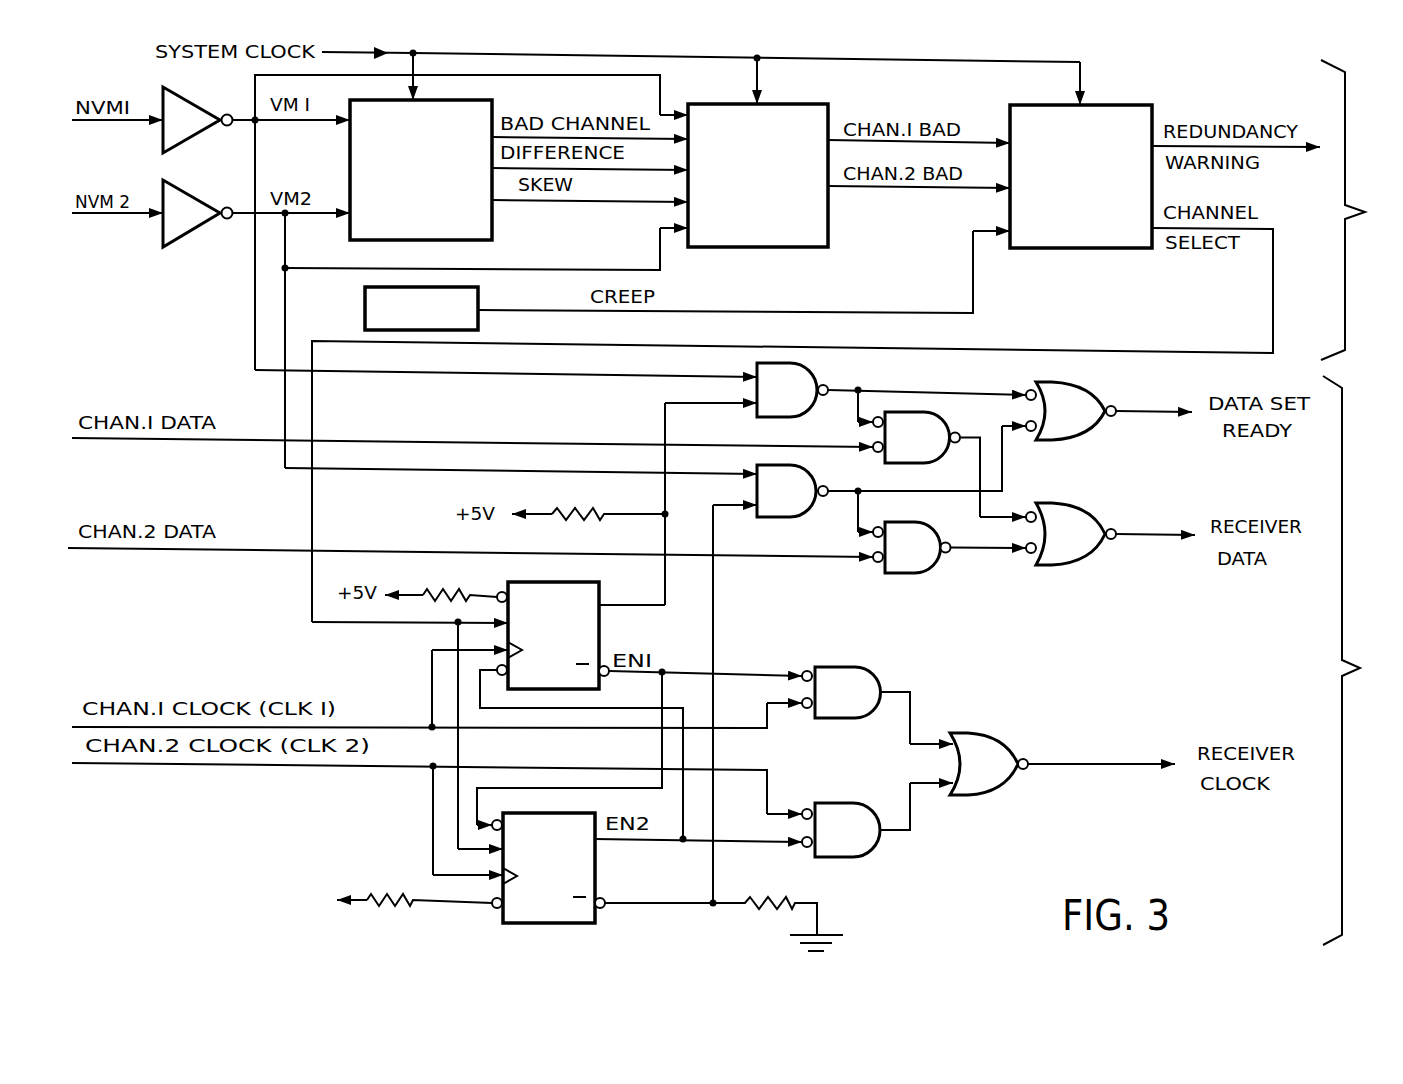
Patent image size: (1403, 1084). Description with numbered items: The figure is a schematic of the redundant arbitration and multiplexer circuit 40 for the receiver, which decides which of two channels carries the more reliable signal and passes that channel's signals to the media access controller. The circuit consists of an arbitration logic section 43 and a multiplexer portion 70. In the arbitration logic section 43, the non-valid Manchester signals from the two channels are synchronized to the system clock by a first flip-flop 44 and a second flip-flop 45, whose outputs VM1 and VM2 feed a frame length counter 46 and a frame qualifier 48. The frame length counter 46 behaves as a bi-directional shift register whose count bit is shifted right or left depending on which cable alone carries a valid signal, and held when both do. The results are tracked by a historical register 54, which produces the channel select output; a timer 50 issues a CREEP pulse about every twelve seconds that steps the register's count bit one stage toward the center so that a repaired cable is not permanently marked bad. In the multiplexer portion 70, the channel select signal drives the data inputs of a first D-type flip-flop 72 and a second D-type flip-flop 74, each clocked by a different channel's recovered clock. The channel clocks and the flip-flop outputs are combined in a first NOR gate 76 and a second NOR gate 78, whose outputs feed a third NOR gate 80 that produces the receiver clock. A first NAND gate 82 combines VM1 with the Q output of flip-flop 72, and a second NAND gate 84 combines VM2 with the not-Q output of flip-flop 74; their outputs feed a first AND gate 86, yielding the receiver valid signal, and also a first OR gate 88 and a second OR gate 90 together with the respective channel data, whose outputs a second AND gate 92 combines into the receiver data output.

The redundant arbitration and multiplexer circuit 40 is at (470, 948).
The arbitration logic section 43 is at (1372, 356).
The first flip-flop 44 is at (188, 143).
The second flip-flop 45 is at (188, 237).
The frame length counter 46 is at (492, 227).
The frame qualifier 48 is at (742, 247).
The timer 50 is at (365, 307).
The historical register 54 is at (1082, 250).
The multiplexer portion 70 is at (1367, 774).
The first D-type flip-flop 72 is at (599, 622).
The second D-type flip-flop 74 is at (572, 921).
The first NOR gate 76 is at (830, 667).
The second NOR gate 78 is at (845, 803).
The third NOR gate 80 is at (990, 735).
The first NAND gate 82 is at (805, 365).
The second NAND gate 84 is at (778, 518).
The first AND gate 86 is at (1093, 432).
The first OR gate 88 is at (893, 472).
The second OR gate 90 is at (920, 573).
The second AND gate 92 is at (1090, 510).